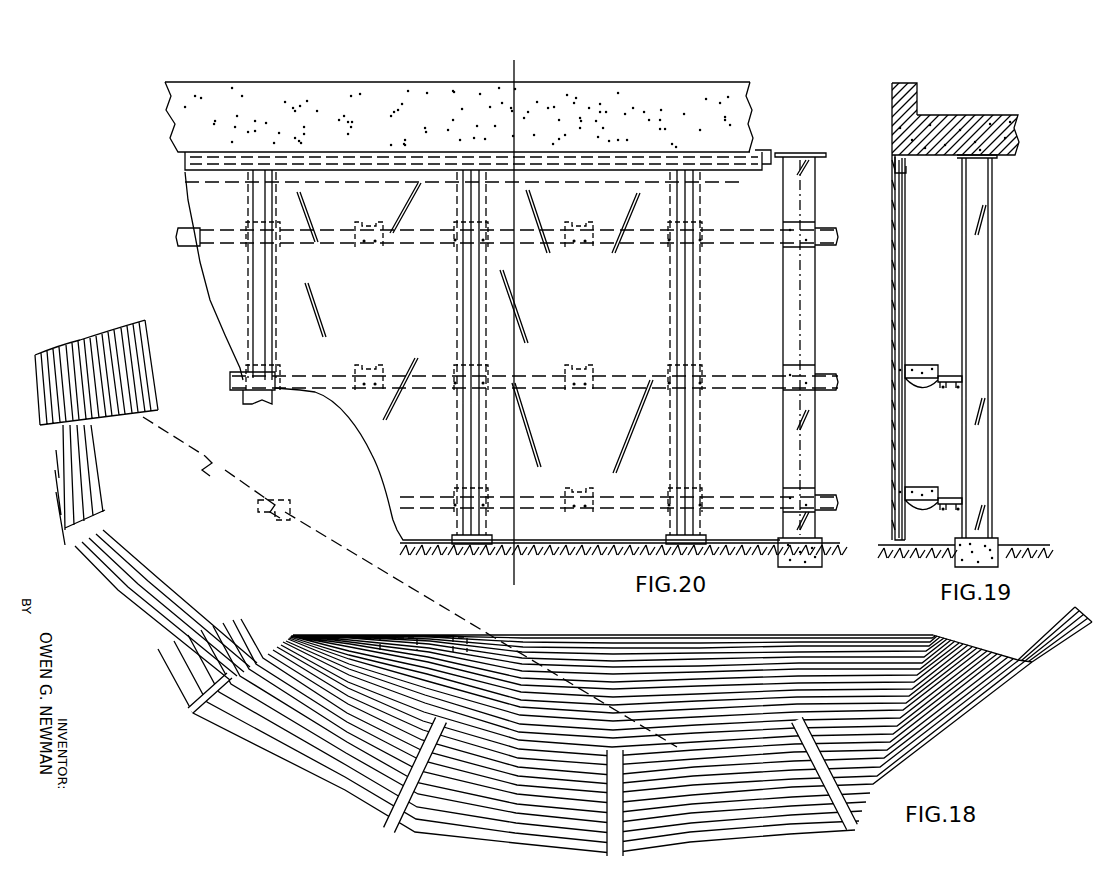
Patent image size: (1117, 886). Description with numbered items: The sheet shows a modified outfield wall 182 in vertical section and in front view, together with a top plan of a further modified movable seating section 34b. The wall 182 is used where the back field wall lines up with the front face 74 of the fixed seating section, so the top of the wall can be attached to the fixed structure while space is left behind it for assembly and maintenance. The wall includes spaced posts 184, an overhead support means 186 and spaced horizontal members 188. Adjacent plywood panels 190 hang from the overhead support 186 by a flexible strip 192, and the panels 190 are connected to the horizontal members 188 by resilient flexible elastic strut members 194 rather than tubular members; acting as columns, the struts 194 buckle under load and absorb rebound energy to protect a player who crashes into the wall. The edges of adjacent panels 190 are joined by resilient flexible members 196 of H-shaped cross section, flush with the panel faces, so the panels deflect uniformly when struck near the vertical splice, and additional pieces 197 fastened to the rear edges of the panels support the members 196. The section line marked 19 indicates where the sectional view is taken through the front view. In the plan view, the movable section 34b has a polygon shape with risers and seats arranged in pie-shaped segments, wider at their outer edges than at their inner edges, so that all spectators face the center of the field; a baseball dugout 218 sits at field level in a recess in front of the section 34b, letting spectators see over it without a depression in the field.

In FIG. 20, the overhead support means 186 is at (174, 126).
In FIG. 19, the overhead support means 186 is at (892, 127).
In FIG. 20, the flexible strip 192 is at (736, 172).
In FIG. 19, the flexible strip 192 is at (905, 170).
In FIG. 20, the panels 190 is at (386, 331).
In FIG. 19, the panels 190 is at (887, 338).
In FIG. 20, the resilient flexible members of H-shaped cross section 196 is at (466, 441).
In FIG. 19, the resilient flexible members of H-shaped cross section 196 is at (905, 450).
In FIG. 20, the spaced posts 184 is at (803, 342).
In FIG. 19, the spaced posts 184 is at (986, 424).
In FIG. 20, the section line 19- 19 is at (524, 574).
In FIG. 19, the front face of the fixed seating section 74 is at (892, 94).
In FIG. 19, the additional pieces 197 is at (893, 463).
In FIG. 19, the resilient flexible elastic strut members 194 is at (930, 240).
In FIG. 19, the spaced horizontal members 188 is at (952, 372).
In FIG. 19, the outfield wall 182 is at (1005, 282).
In FIG. 18, the movable section 34b is at (257, 482).
In FIG. 18, the baseball dugout 218 is at (418, 648).